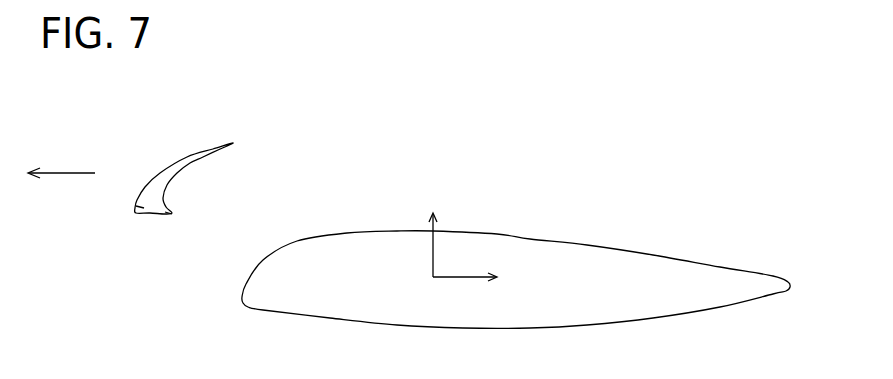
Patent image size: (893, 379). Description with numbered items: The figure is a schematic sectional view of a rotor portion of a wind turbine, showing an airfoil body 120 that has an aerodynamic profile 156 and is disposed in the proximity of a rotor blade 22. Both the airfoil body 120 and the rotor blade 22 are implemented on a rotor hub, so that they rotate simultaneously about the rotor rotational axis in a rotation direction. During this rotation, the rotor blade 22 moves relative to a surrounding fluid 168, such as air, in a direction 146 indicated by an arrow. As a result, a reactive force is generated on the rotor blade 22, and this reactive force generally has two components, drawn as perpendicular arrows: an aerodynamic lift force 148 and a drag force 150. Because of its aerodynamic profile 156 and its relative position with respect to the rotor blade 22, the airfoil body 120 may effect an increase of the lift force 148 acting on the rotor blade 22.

The rotor blade 22 is at (682, 298).
The surrounding fluid 168 is at (258, 112).
The aerodynamic profile 156 is at (143, 207).
The airfoil body 120 is at (172, 213).
The direction 146 is at (40, 172).
The aerodynamic lift force 148 is at (437, 228).
The drag force 150 is at (450, 278).